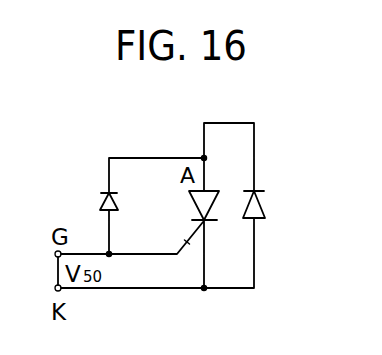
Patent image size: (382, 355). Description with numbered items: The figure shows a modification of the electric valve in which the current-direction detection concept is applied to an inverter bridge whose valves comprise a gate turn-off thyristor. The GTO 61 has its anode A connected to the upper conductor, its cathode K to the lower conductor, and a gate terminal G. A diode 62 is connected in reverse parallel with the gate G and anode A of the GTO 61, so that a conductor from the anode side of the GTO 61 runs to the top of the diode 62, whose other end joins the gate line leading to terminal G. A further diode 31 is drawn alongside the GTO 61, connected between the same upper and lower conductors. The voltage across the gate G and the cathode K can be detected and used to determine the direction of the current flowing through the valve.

The gate turn-off thyristor 61 is at (210, 191).
The diode 62 is at (118, 204).
The diode 31 is at (266, 207).